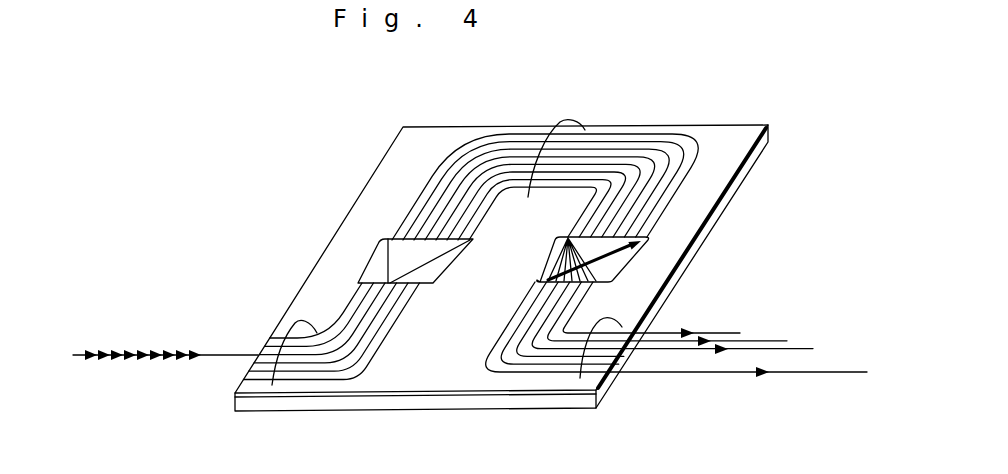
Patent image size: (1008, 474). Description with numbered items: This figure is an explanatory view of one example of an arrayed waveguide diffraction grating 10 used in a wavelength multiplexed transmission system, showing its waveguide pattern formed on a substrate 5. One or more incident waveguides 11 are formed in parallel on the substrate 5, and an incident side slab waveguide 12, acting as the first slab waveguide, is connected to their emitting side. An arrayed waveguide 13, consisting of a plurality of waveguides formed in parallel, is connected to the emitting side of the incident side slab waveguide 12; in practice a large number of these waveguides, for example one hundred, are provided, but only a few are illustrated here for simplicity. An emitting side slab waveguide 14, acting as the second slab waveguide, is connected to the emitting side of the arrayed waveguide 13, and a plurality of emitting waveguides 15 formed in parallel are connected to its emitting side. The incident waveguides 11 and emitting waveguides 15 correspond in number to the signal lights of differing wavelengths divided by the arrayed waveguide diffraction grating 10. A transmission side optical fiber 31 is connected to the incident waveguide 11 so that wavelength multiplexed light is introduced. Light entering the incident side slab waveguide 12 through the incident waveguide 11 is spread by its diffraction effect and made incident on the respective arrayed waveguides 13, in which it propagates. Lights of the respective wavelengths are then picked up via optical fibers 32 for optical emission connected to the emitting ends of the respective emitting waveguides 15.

The substrate 5 is at (733, 150).
The arrayed waveguide diffraction grating 10 is at (425, 143).
The incident waveguide 11 is at (283, 327).
The incident side slab waveguide 12 is at (373, 258).
The arrayed waveguide 13 is at (572, 118).
The emitting side slab waveguide 14 is at (647, 249).
The emitting waveguide 15 is at (617, 318).
The transmission side optical fiber 31 is at (227, 357).
The optical fiber for optical emission 32 is at (660, 375).